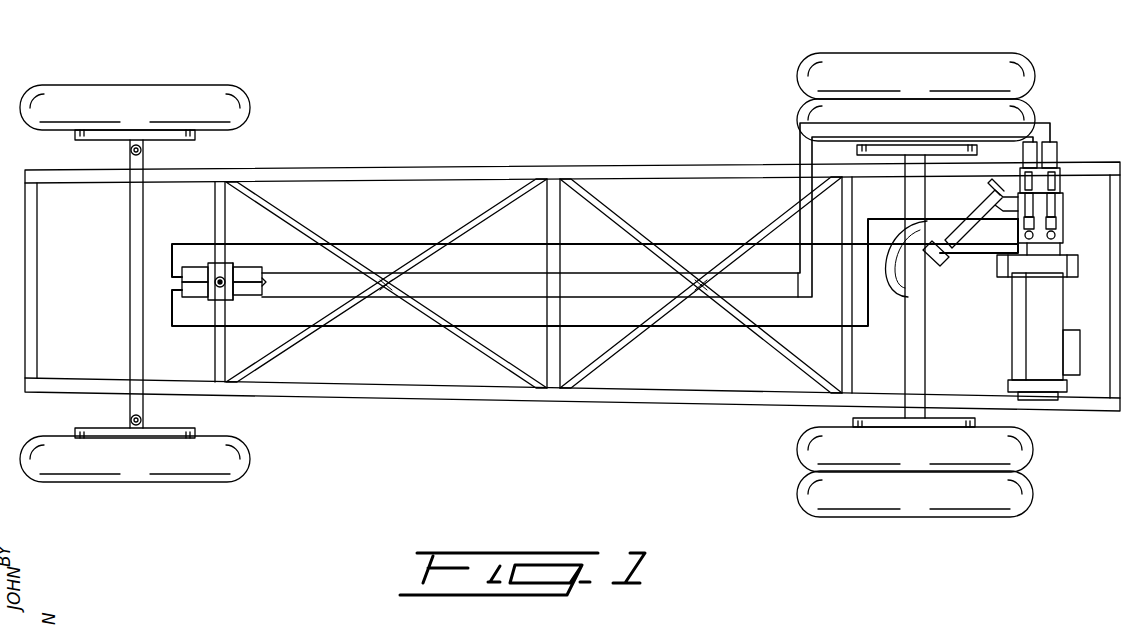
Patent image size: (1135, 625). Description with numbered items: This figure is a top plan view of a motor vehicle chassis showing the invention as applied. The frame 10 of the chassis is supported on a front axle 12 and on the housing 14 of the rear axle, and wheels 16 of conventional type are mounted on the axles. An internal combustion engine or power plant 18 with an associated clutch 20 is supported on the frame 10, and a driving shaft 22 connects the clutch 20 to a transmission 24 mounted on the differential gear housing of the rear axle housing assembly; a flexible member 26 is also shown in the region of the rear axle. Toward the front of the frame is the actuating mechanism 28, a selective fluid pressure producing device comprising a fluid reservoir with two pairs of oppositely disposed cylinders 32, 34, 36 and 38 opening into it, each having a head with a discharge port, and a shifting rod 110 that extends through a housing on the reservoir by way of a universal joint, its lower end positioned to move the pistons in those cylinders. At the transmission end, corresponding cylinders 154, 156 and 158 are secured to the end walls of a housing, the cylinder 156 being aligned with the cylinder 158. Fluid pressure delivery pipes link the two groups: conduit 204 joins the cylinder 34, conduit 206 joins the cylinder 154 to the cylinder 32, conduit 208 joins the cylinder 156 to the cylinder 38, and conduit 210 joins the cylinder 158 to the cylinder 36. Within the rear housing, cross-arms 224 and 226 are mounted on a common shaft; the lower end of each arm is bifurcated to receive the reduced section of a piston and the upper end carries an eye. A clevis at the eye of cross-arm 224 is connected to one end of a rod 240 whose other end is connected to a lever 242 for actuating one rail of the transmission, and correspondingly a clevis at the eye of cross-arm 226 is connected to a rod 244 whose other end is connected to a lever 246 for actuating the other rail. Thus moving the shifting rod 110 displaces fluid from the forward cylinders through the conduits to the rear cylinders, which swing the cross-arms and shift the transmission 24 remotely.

The frame 10 is at (522, 177).
The front axle 12 is at (132, 336).
The rear axle housing 14 is at (912, 350).
The wheels 16 is at (212, 108).
The internal combustion engine 18 is at (1036, 350).
The clutch 20 is at (1040, 268).
The driving shaft 22 is at (992, 200).
The transmission 24 is at (1078, 262).
The flexible hose 26 is at (906, 262).
The actuating mechanism 28 is at (222, 276).
The cylinder 32 is at (195, 297).
The cylinder 34 is at (255, 292).
The cylinder 36 is at (195, 268).
The cylinder 38 is at (258, 270).
The shifting rod 110 is at (235, 300).
The cylinder 154 is at (988, 206).
The cylinder 156 is at (1058, 156).
The cylinder 158 is at (1022, 156).
The fluid pressure delivery conduit 204 is at (455, 297).
The fluid pressure delivery conduit 206 is at (372, 326).
The fluid pressure delivery conduit 208 is at (450, 273).
The fluid pressure delivery conduit 210 is at (352, 244).
The cross-arm 224 is at (1020, 176).
The cross-arm 226 is at (1060, 186).
The rod 240 is at (1012, 228).
The lever 242 is at (952, 256).
The rod 244 is at (1062, 214).
The lever 246 is at (1062, 232).